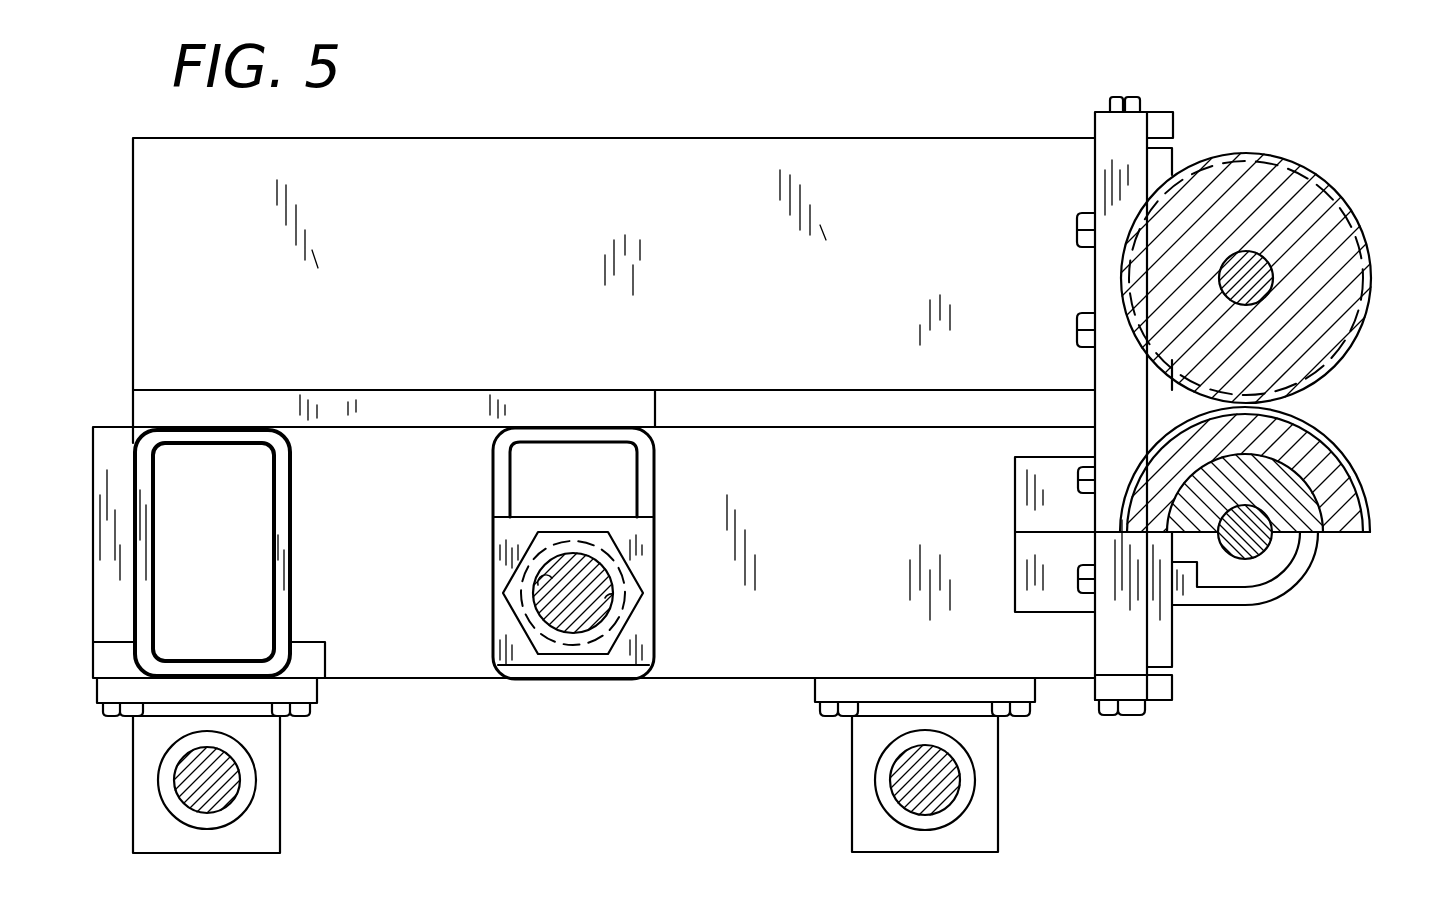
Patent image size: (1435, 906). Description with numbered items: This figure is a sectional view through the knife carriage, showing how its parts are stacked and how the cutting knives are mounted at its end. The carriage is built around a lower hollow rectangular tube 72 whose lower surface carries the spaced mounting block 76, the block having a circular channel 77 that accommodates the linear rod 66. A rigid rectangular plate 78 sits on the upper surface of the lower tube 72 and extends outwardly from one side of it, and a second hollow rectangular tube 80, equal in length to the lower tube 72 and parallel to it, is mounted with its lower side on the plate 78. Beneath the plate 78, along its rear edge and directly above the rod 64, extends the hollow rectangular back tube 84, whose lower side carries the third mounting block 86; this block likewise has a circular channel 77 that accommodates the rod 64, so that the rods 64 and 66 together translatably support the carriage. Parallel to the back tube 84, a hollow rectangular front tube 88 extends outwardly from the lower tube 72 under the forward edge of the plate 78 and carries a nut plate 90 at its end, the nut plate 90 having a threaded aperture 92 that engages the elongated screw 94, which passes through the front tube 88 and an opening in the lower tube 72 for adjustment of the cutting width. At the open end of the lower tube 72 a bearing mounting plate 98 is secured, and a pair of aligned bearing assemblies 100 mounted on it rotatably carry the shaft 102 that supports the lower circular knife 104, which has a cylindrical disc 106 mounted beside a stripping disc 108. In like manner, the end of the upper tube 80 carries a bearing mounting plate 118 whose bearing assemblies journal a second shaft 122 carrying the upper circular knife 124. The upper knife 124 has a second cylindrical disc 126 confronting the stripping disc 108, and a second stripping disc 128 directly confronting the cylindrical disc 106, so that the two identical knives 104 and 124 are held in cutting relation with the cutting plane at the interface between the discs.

The linear rod 64 is at (222, 797).
The linear rod 66 is at (905, 778).
The lower hollow rectangular tube 72 is at (866, 507).
The mounting block 76 is at (917, 784).
The circular channel 77 is at (222, 758).
The rigid rectangular plate 78 is at (452, 405).
The second hollow rectangular tube 80 is at (553, 266).
The back tube 84 is at (287, 501).
The third mounting block 86 is at (598, 784).
The front tube 88 is at (500, 470).
The nut plate 90 is at (525, 528).
The threaded aperture 92 is at (568, 593).
The elongated screw 94 is at (545, 580).
The bearing mounting plate 98 is at (1108, 627).
The bearing assembly 100 is at (1318, 563).
The shaft 102 is at (1248, 518).
The lower circular knife 104 is at (1260, 477).
The cylindrical disc 106 is at (1318, 440).
The stripping disc 108 is at (1170, 458).
The bearing mounting plate 118 is at (1106, 172).
The second shaft 122 is at (1233, 264).
The upper circular knife 124 is at (1271, 247).
The second cylindrical disc 126 is at (1370, 238).
The second stripping disc 128 is at (1333, 182).